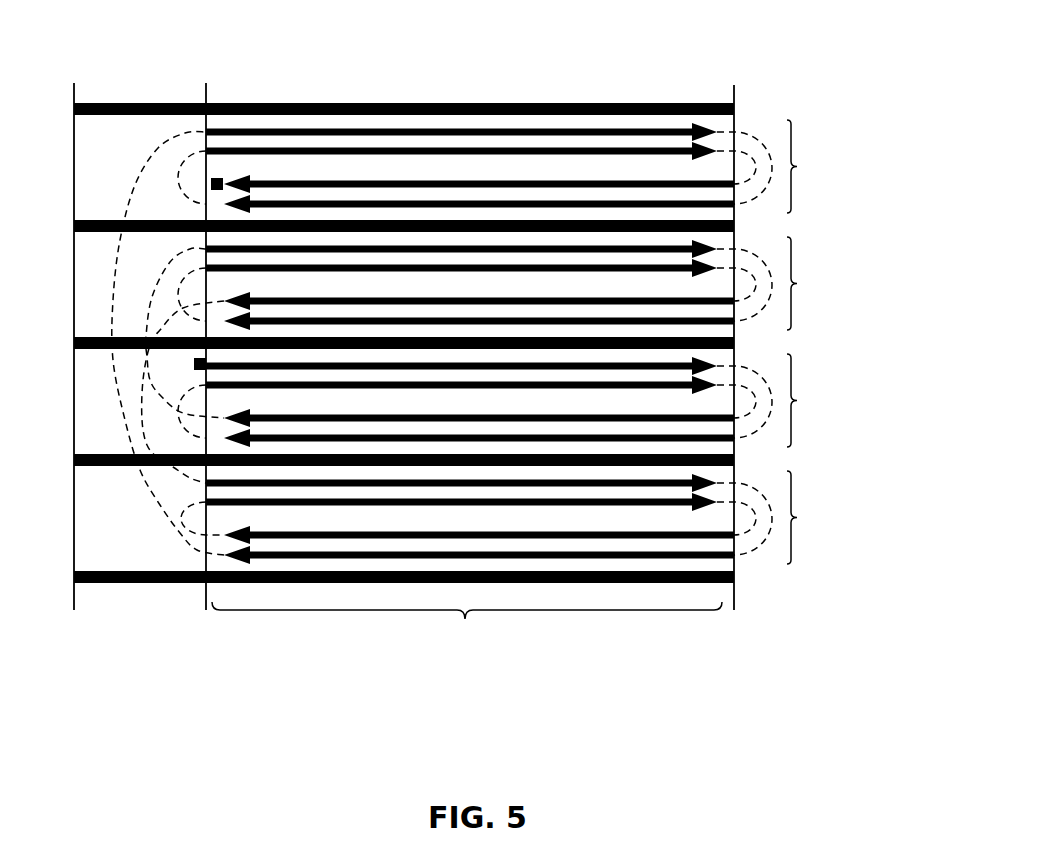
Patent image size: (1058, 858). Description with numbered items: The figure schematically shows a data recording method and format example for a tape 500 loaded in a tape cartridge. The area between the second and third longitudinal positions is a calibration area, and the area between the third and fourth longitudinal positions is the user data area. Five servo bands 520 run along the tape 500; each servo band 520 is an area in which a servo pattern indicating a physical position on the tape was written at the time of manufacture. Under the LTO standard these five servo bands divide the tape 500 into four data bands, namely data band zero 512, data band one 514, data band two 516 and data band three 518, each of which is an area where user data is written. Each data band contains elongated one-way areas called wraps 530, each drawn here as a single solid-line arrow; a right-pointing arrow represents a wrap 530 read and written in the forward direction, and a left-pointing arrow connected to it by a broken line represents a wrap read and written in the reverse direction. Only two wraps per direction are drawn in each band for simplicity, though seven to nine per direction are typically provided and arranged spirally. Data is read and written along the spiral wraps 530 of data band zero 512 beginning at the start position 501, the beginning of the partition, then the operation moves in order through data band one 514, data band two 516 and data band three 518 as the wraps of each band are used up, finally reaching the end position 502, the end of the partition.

The tape 500 is at (614, 82).
The start position 501 is at (200, 364).
The end position 502 is at (216, 178).
The data band #0 (DB0) 512 is at (560, 400).
The data band #1 (DB1) 514 is at (542, 360).
The data band #2 (DB2) 516 is at (561, 517).
The data band #3 (DB3) 518 is at (527, 337).
The servo band 520 is at (493, 344).
The wrap 530 is at (427, 139).